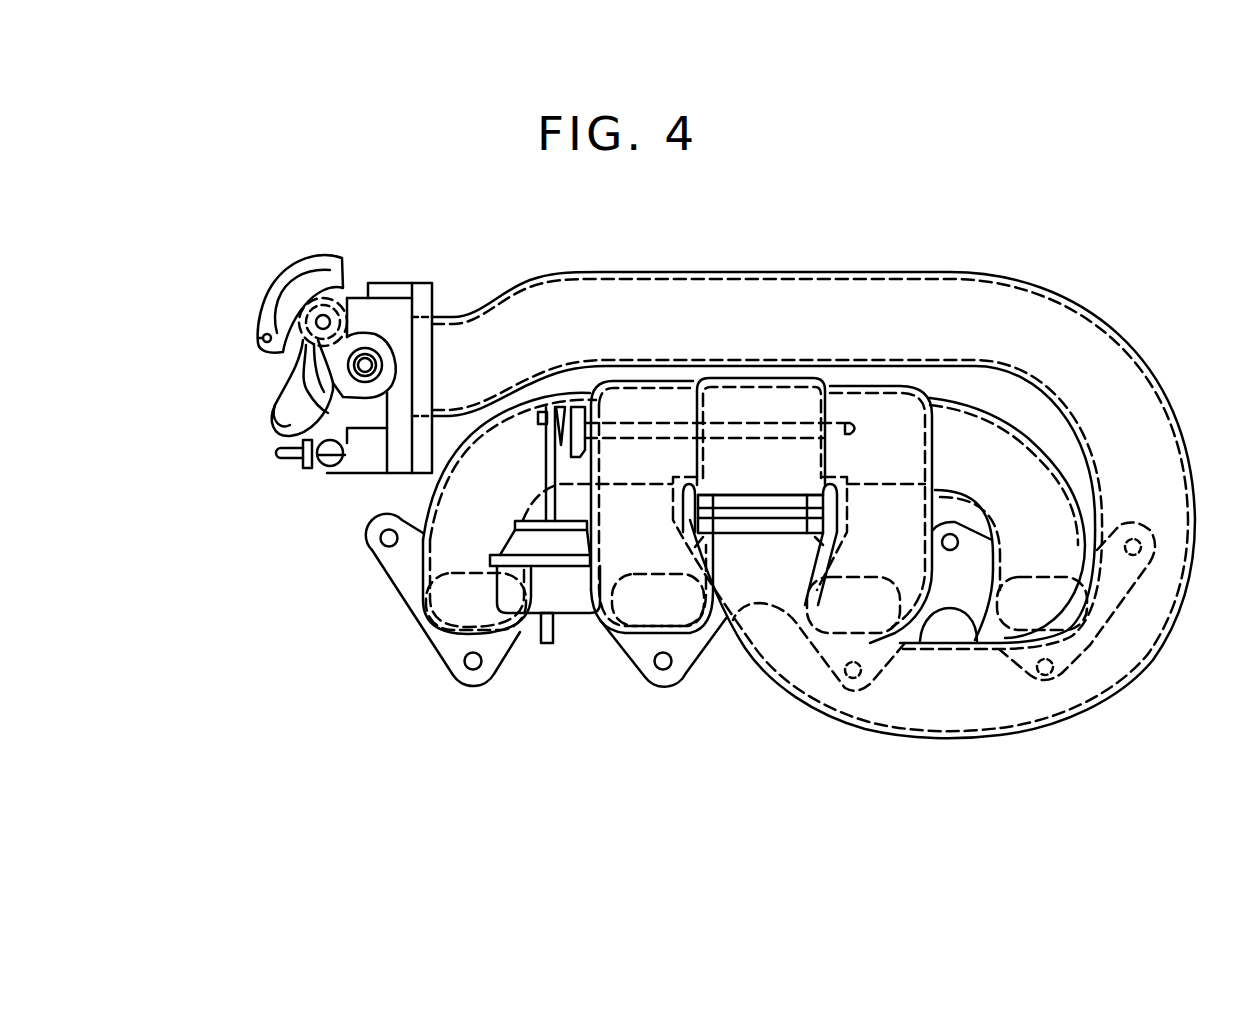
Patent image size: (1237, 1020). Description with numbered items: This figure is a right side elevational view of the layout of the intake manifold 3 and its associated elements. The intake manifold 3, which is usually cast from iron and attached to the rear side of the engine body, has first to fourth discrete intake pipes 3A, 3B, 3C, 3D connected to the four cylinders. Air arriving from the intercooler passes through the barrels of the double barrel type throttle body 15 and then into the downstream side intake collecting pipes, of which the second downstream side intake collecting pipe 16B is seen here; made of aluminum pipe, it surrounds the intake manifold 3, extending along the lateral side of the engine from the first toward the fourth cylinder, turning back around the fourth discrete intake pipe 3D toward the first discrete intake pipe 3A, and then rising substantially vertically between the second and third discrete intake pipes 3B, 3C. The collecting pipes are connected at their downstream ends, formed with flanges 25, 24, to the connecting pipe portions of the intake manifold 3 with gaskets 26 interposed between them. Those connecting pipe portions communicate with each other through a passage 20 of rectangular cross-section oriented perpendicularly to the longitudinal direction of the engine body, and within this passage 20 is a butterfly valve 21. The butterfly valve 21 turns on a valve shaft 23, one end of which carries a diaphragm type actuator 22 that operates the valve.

The intake manifold 3 is at (374, 572).
The first discrete intake pipe 3A is at (420, 547).
The second discrete intake pipe 3B is at (587, 593).
The third discrete intake pipe 3C is at (923, 592).
The fourth discrete intake pipe 3D is at (975, 637).
The double barrel type throttle body 15 is at (382, 283).
The second downstream side intake collecting pipe 16B is at (1073, 292).
The passage 20 is at (793, 478).
The butterfly valve 21 is at (767, 406).
The actuator 22 is at (538, 597).
The valve shaft 23 is at (840, 421).
The flange 24 is at (760, 520).
The flange 25 is at (727, 503).
The gasket 26 is at (822, 510).